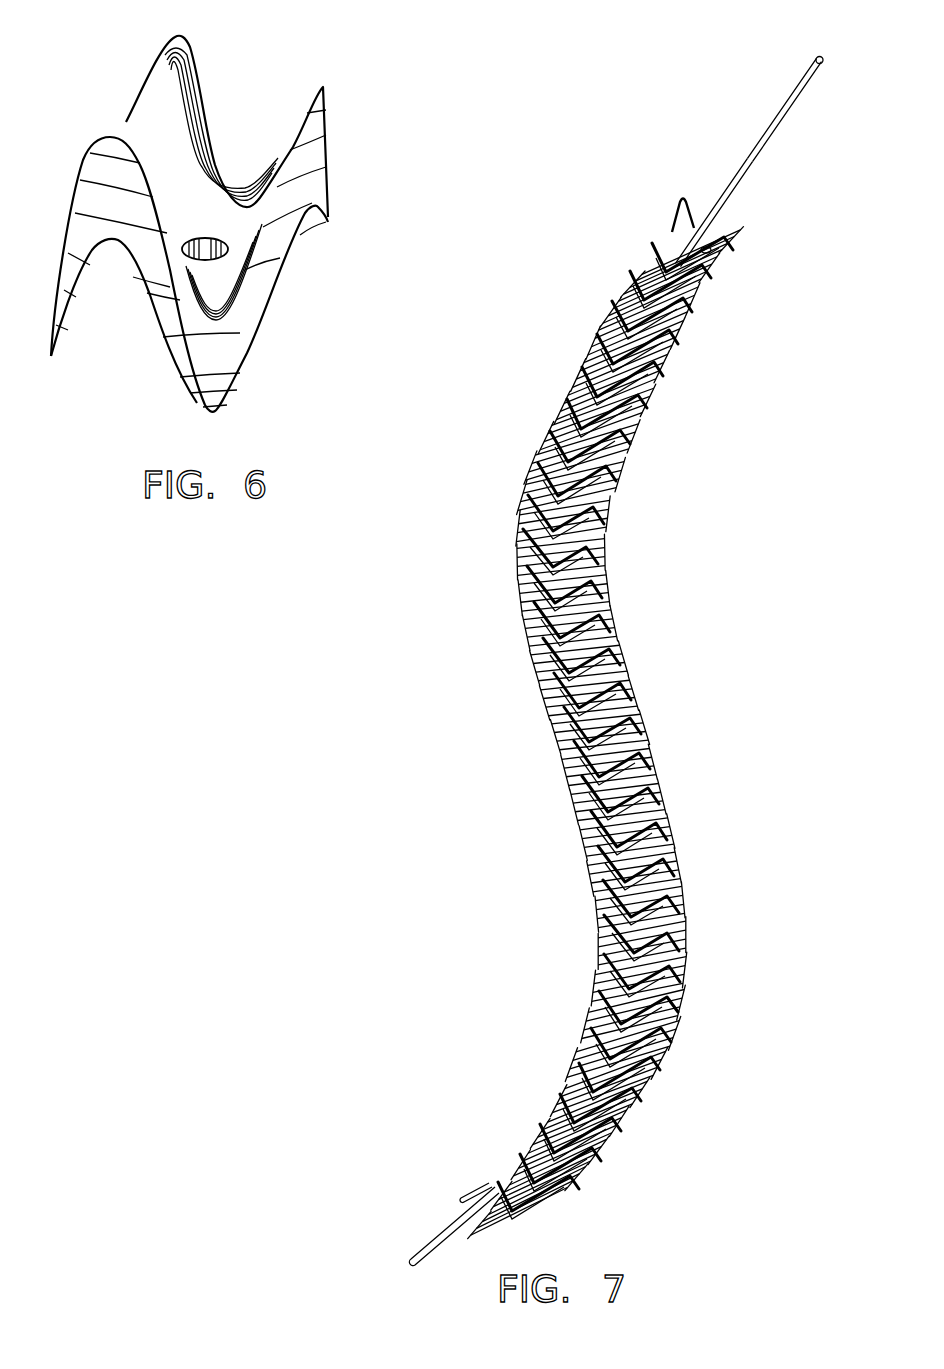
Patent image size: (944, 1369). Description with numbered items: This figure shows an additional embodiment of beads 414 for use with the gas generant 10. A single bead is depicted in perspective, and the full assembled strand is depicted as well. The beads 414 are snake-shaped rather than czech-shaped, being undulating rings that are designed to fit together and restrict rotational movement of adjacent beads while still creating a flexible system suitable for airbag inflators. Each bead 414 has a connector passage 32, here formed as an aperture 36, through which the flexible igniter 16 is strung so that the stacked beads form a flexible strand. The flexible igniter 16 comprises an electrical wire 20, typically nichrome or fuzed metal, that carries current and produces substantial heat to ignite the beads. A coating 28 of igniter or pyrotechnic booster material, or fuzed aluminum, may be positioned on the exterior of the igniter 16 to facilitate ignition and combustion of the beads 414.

In FIG. 7, the gas generant 10 is at (625, 746).
In FIG. 7, the flexible igniter 16 is at (752, 150).
In FIG. 7, the electrical wire 20 is at (785, 113).
In FIG. 7, the coating 28 is at (817, 56).
In FIG. 6, the connector passage 32 is at (197, 262).
In FIG. 7, the connector passage 32 is at (708, 248).
In FIG. 6, the aperture 36 is at (205, 238).
In FIG. 7, the aperture 36 is at (672, 263).
In FIG. 6, the snake-shaped beads 414 is at (310, 160).
In FIG. 7, the snake-shaped beads 414 is at (607, 500).